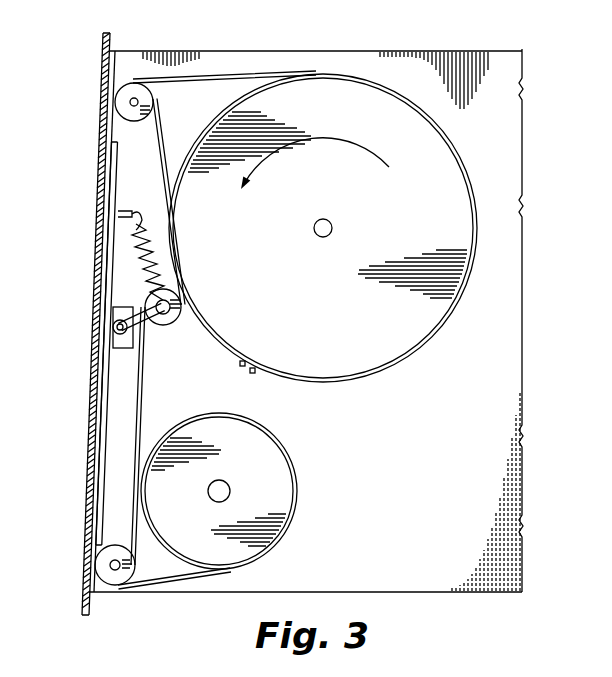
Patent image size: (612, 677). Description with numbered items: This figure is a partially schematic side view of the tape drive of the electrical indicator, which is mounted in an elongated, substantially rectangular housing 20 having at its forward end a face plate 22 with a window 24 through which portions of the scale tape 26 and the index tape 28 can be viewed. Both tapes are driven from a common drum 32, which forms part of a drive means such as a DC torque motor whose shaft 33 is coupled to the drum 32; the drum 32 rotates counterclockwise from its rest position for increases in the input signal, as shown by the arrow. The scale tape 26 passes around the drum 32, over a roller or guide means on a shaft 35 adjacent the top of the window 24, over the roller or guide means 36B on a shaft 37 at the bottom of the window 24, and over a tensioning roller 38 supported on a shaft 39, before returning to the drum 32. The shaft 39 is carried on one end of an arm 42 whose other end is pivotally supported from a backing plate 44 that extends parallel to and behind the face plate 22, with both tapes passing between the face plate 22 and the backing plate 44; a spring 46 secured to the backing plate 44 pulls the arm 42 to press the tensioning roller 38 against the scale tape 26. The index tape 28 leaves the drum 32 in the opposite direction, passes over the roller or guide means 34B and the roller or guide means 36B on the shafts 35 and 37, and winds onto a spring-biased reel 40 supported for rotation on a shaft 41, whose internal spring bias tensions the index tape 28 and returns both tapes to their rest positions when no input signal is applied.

The housing 20 is at (512, 80).
The face plate 22 is at (83, 572).
The window 24 is at (86, 332).
The scale tape 26 is at (218, 78).
The index tape 28 is at (164, 138).
The drum 32 is at (436, 163).
The shaft 33 is at (332, 232).
The roller or guide means 34B is at (137, 88).
The shaft 35 is at (128, 103).
The roller or guide means 36B is at (114, 584).
The shaft 37 is at (130, 578).
The tensioning roller 38 is at (172, 318).
The shaft 39 is at (150, 330).
The spring-biased reel 40 is at (294, 494).
The shaft 41 is at (224, 492).
The arm 42 is at (116, 334).
The backing plate 44 is at (112, 414).
The spring 46 is at (147, 220).